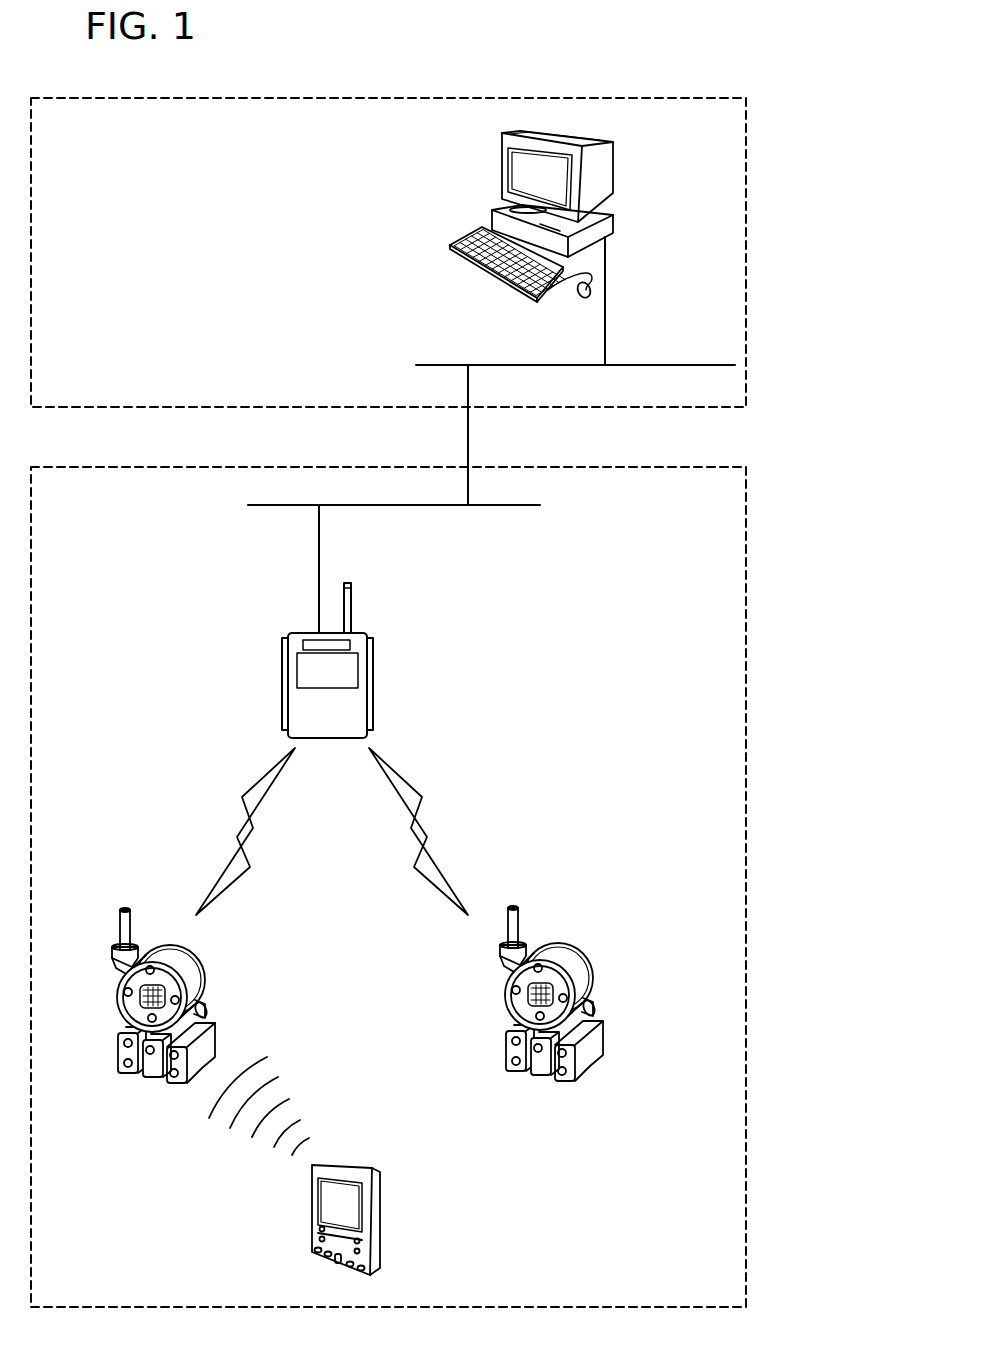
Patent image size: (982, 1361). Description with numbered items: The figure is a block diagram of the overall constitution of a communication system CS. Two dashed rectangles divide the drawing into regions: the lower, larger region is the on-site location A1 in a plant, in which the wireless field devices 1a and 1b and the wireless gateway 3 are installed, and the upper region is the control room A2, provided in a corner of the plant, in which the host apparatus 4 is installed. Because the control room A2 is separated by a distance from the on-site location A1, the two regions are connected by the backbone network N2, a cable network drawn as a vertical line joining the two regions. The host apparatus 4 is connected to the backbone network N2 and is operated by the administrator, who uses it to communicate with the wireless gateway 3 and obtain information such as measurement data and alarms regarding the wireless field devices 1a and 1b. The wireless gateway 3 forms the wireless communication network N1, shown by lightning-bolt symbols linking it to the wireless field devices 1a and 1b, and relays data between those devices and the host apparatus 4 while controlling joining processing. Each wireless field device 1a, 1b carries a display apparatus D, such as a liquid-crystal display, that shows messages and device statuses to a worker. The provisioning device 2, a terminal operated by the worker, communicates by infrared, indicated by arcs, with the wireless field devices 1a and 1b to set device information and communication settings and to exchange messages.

The communication system CS is at (802, 128).
The control room A2 is at (746, 262).
The on-site location A1 is at (745, 660).
The backbone network N2 is at (468, 438).
The wireless communication network N1 is at (445, 812).
The host apparatus 4 is at (613, 165).
The wireless gateway 3 is at (373, 665).
The wireless field device 1a is at (207, 972).
The wireless field device 1b is at (595, 970).
The display apparatus D is at (128, 1010).
The provisioning device 2 is at (358, 1165).